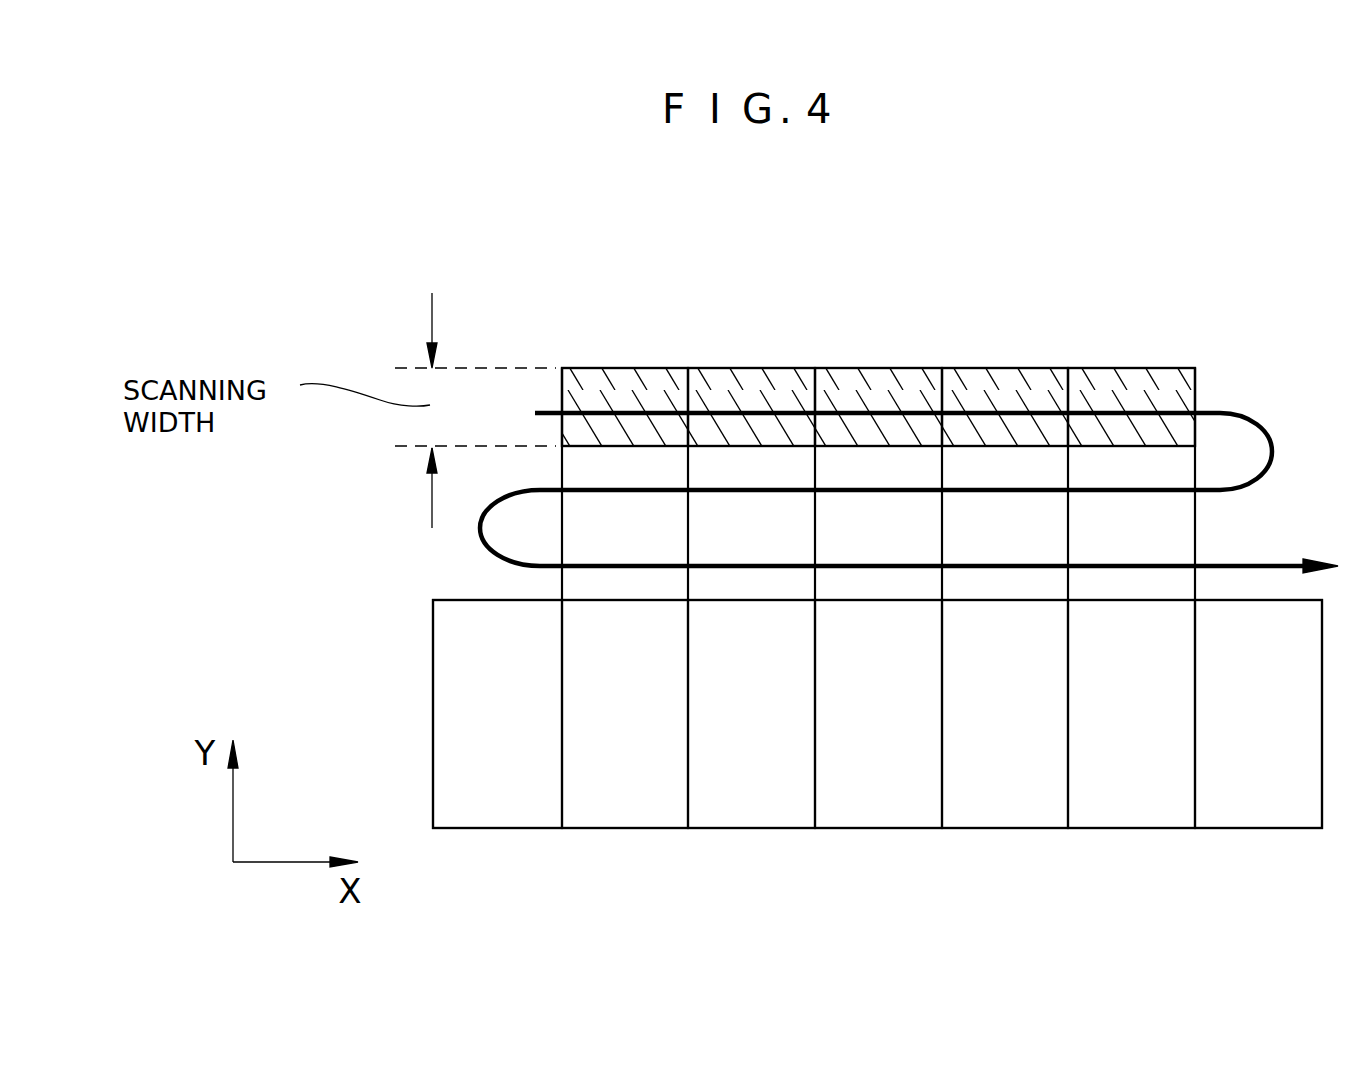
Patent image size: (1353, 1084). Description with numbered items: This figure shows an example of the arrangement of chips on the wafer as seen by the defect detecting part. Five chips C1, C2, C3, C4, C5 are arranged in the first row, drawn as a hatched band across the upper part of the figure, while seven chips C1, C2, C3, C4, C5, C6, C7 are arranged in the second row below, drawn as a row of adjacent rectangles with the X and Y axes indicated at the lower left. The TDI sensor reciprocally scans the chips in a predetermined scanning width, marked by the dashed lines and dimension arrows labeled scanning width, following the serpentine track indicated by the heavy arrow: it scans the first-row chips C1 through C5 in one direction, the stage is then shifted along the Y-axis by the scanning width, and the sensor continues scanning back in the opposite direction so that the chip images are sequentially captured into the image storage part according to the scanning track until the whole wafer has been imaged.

The chip C1 is at (622, 463).
The chip C2 is at (750, 467).
The chip C3 is at (878, 468).
The chip C4 is at (1005, 462).
The chip C5 is at (1135, 468).
The chip C6 is at (1142, 810).
The chip C7 is at (1264, 808).